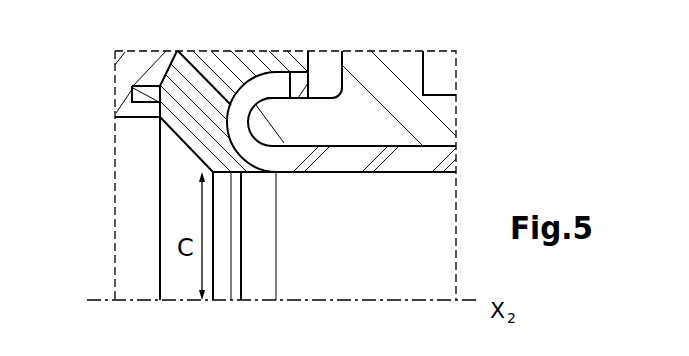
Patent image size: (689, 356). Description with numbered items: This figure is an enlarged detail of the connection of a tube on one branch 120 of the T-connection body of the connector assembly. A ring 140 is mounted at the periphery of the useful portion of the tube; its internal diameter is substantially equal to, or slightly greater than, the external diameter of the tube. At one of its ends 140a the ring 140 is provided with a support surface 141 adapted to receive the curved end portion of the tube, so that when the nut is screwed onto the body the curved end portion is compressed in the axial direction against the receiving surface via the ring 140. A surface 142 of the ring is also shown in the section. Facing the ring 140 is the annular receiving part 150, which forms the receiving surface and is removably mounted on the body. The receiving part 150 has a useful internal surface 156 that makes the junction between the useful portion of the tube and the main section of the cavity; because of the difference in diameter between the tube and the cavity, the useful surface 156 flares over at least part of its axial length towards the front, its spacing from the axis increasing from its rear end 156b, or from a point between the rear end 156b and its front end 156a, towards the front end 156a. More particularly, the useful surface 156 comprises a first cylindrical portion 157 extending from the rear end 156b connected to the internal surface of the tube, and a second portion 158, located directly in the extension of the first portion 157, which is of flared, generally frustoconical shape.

The branch 120 is at (528, 0).
The ring 140 is at (374, 60).
The end of the ring 140a is at (290, 72).
The support surface 141 is at (254, 88).
The layer of housing body 142 is at (655, 24).
The receiving part 150 is at (200, 60).
The useful internal surface 156 is at (184, 153).
The front end of the useful surface 156a is at (149, 130).
The rear end of the useful surface 156b is at (244, 183).
The first cylindrical portion 157 is at (224, 184).
The second portion 158 is at (141, 232).